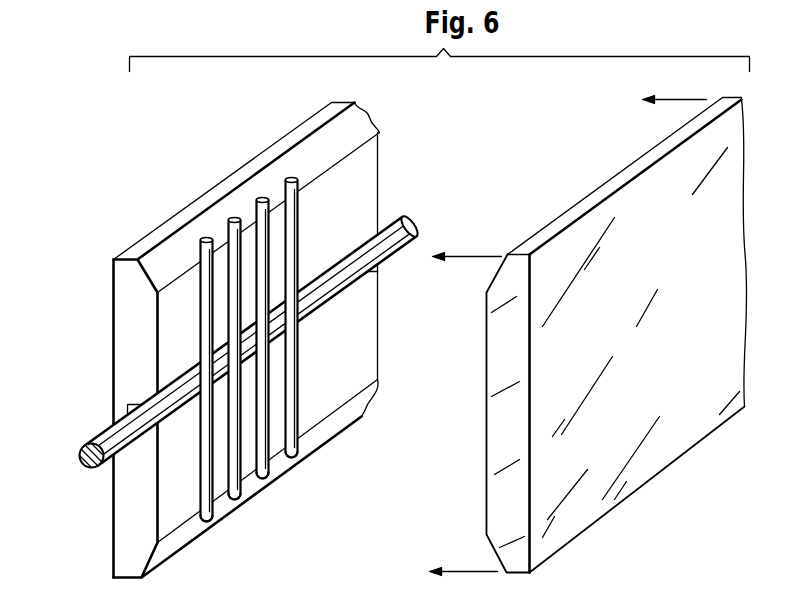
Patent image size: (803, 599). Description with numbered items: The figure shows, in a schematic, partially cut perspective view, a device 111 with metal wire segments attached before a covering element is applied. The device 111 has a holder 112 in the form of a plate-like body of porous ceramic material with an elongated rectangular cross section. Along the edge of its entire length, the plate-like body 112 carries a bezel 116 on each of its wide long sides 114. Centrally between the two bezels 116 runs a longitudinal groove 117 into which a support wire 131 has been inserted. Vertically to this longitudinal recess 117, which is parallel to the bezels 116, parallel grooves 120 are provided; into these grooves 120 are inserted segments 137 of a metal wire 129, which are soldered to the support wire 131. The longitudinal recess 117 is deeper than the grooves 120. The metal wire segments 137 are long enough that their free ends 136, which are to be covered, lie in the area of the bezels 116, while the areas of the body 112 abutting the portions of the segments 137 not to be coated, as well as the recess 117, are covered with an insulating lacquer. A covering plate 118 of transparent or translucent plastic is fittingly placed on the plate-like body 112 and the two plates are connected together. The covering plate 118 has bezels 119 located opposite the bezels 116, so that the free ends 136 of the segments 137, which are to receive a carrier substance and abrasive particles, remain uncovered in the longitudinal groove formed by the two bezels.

The device 111 is at (491, 149).
The holder 112 is at (273, 336).
The wide long sides 114 is at (368, 197).
The bezel 116 is at (360, 128).
The longitudinal groove 117 is at (237, 343).
The covering plate 118 is at (595, 335).
The bezels 119 is at (493, 277).
The parallel grooves 120 is at (298, 420).
The metal wire 129 is at (196, 295).
The support wire 131 is at (106, 435).
The free ends 136 is at (220, 354).
The metal wire segments 137 is at (229, 327).